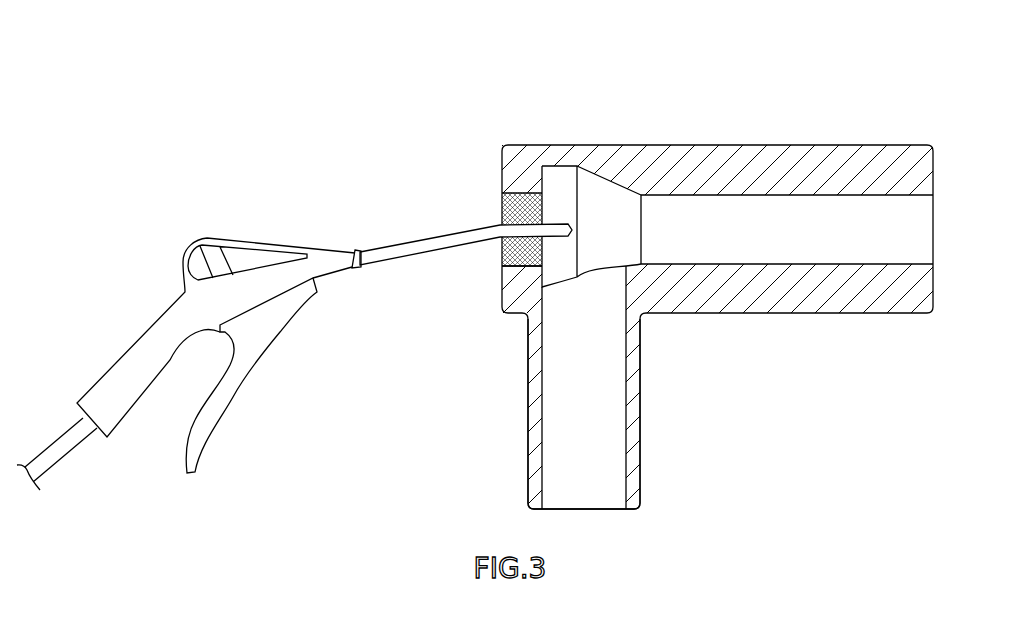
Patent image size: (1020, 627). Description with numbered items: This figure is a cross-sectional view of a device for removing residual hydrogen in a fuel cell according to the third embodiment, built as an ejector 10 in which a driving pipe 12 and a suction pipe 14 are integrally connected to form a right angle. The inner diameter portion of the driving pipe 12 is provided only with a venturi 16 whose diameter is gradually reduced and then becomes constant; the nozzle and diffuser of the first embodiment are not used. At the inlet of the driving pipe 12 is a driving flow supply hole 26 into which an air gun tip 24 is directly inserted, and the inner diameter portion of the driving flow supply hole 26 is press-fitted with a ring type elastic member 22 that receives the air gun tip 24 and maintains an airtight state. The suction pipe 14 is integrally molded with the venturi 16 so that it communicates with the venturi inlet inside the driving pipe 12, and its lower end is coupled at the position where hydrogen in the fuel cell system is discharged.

The ejector 10 is at (672, 284).
The driving pipe 12 is at (882, 167).
The suction pipe 14 is at (633, 437).
The venturi 16 is at (625, 238).
The elastic member 22 is at (502, 208).
The air gun tip 24 is at (397, 250).
The driving flow supply hole 26 is at (502, 253).